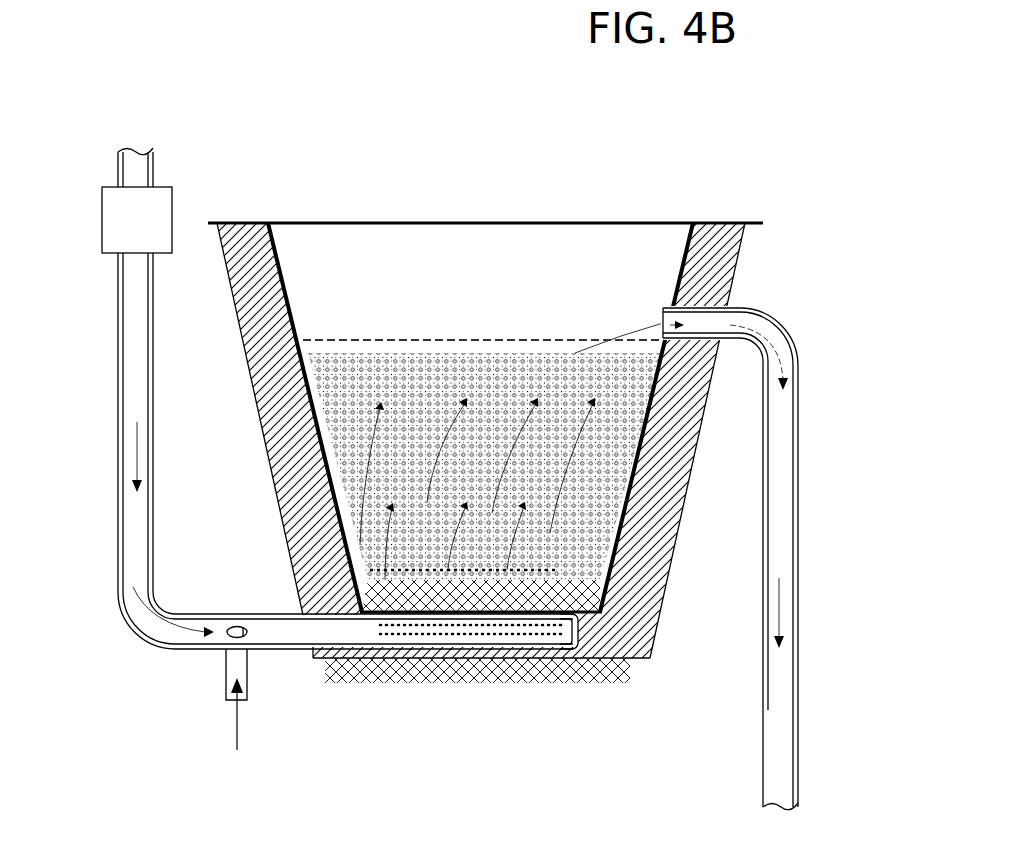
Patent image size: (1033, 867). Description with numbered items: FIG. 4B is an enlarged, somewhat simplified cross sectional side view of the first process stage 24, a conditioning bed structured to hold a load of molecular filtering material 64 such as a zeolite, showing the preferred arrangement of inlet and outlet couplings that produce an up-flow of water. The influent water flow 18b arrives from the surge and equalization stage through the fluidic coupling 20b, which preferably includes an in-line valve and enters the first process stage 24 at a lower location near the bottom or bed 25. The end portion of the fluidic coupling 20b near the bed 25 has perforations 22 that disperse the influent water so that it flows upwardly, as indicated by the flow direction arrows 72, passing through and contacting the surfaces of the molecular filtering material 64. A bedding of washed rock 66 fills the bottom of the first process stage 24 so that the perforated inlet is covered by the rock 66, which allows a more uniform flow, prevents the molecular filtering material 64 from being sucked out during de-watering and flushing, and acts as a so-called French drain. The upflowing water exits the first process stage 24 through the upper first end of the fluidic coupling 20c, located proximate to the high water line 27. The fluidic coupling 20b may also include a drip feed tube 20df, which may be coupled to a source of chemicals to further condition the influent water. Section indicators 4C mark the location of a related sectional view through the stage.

The system influent water flow 18b is at (138, 162).
The molecular filtering material 64 is at (343, 392).
The flow direction arrows 72 is at (390, 417).
The high water line 27 is at (525, 325).
The section line 4C is at (225, 265).
The fluidic coupling 20c is at (783, 520).
The fluidic coupling 20b is at (145, 630).
The drip feed tube 20df is at (237, 715).
The stone, gravel or washed rock 66 is at (405, 655).
The perforations 22 is at (475, 630).
The bottom or bed 25 is at (515, 663).
The first process stage 24 is at (630, 742).